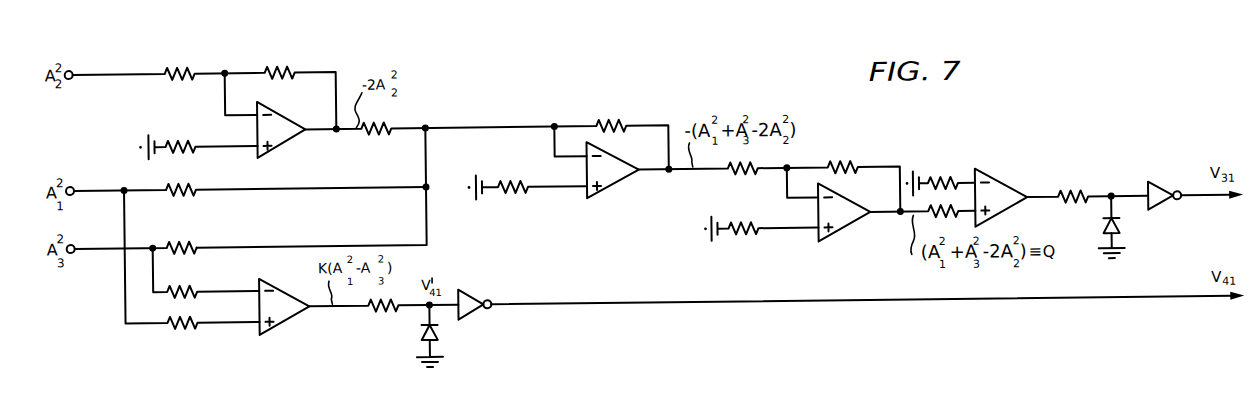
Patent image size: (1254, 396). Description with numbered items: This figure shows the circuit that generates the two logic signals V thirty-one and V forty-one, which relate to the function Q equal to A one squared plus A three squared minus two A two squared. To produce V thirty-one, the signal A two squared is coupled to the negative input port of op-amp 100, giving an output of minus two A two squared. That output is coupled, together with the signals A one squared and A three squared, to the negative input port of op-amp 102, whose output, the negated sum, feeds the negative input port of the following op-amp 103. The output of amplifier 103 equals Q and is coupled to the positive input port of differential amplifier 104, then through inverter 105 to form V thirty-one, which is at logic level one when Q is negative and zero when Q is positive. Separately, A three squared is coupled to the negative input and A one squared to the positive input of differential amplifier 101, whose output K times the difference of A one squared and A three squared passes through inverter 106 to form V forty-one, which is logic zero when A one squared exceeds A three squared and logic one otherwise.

The op-amp 100 is at (284, 136).
The differential amplifier 101 is at (282, 315).
The op-amp 102 is at (608, 182).
The op-amp 103 is at (843, 227).
The differential amplifier 104 is at (997, 197).
The inverter 105 is at (1155, 211).
The inverter 106 is at (470, 310).